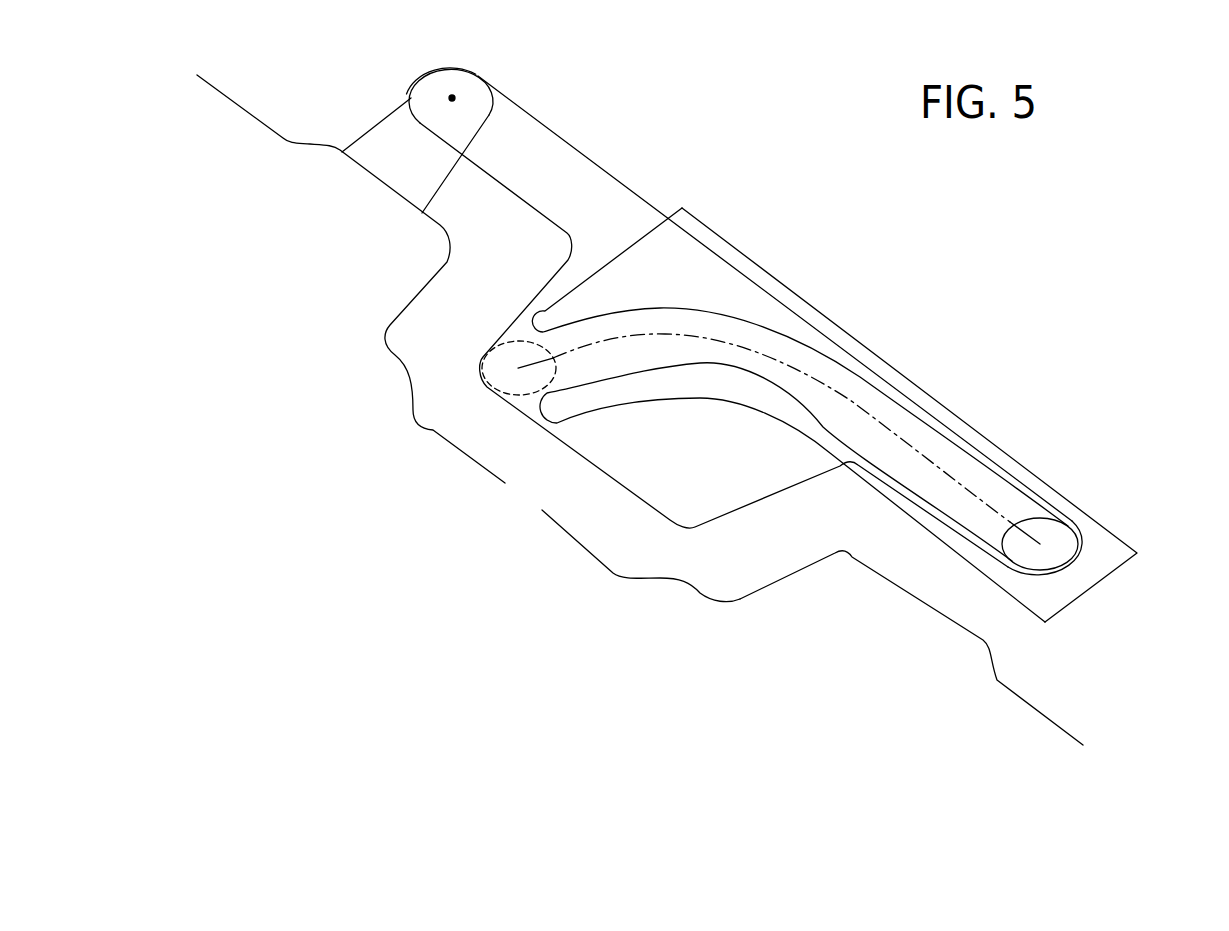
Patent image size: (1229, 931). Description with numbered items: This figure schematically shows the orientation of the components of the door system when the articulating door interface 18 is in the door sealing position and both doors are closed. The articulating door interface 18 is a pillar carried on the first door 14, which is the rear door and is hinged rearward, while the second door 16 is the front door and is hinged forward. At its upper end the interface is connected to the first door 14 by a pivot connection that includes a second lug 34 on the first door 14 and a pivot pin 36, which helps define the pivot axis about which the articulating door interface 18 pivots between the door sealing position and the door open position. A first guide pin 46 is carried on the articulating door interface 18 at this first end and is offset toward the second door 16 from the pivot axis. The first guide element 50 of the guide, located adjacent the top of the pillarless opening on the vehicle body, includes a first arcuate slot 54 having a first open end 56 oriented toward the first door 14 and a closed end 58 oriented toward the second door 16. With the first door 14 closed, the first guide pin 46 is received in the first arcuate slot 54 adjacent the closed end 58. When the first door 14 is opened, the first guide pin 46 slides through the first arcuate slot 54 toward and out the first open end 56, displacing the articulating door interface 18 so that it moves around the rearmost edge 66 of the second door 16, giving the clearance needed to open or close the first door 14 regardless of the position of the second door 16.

The first door 14 is at (250, 120).
The second door 16 is at (930, 582).
The articulating door interface 18 is at (540, 140).
The second lug 34 is at (377, 143).
The pivot pin 36 is at (452, 98).
The first guide pin 46 is at (500, 393).
The first guide element 50 is at (817, 307).
The first arcuate slot 54 is at (880, 403).
The first open end 56 is at (563, 343).
The closed end 58 is at (1073, 570).
The rearmost edge 66 is at (542, 510).